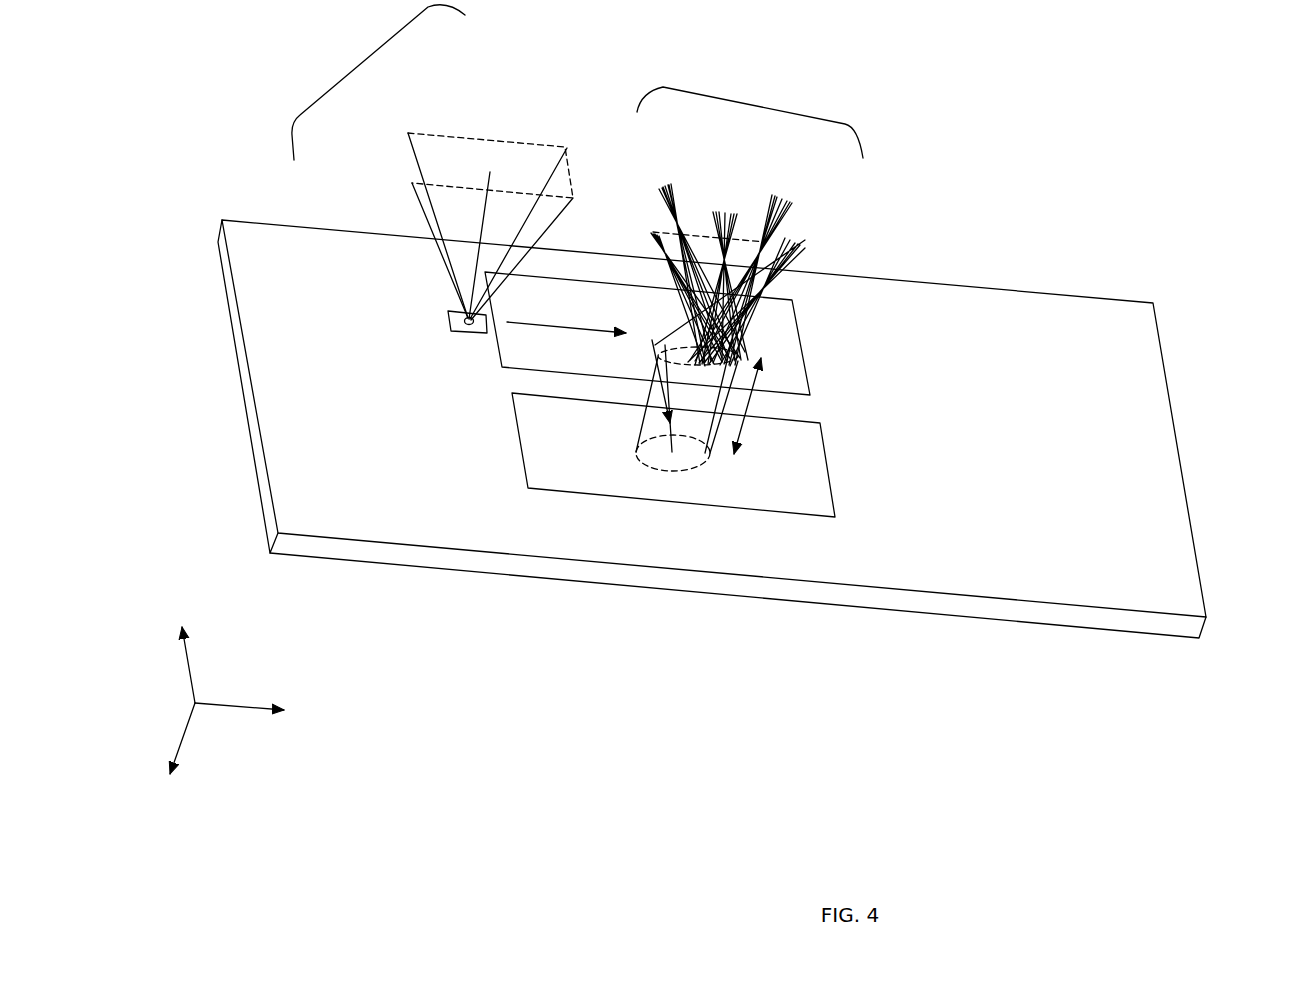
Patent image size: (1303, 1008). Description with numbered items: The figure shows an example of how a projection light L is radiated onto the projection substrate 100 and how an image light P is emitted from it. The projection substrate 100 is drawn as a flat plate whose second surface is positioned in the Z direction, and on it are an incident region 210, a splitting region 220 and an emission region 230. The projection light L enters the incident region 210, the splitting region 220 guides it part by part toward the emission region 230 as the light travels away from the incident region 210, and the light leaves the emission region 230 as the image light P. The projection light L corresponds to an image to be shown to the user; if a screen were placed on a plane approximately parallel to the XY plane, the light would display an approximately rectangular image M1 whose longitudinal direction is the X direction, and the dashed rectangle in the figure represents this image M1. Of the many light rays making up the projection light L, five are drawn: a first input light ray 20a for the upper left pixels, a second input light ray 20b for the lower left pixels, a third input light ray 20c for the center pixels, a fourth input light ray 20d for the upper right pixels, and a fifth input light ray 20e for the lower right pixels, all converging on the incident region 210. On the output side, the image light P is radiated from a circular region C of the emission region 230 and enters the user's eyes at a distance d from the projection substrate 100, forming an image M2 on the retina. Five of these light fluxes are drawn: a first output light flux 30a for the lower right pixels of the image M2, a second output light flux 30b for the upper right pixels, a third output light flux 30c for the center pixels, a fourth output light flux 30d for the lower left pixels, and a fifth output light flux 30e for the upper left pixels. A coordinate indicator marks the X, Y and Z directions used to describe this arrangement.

The projection substrate 100 is at (1027, 291).
The incident region 210 is at (462, 333).
The splitting region 220 is at (497, 353).
The emission region 230 is at (520, 460).
The first input light ray 20a is at (404, 131).
The second input light ray 20b is at (409, 183).
The third input light ray 20c is at (487, 168).
The fourth input light ray 20d is at (565, 145).
The fifth input light ray 20e is at (569, 195).
The first output light flux 30a is at (803, 225).
The second output light flux 30b is at (779, 185).
The third output light flux 30c is at (728, 194).
The fourth output light flux 30d is at (650, 222).
The fifth output light flux 30e is at (668, 170).
The projection light L is at (363, 63).
The image light P is at (755, 105).
The image M1 is at (575, 170).
The image M2 is at (700, 240).
The circular region C is at (668, 472).
The distance d is at (750, 406).
The X direction X is at (245, 690).
The Y direction Y is at (169, 651).
The Z direction Z is at (162, 738).